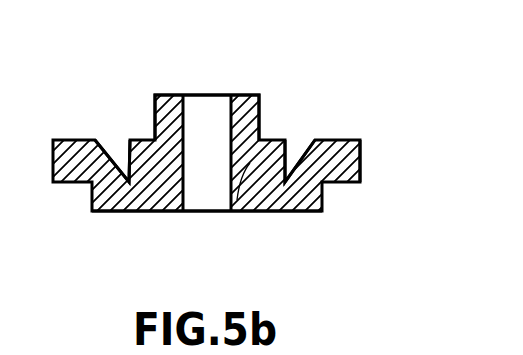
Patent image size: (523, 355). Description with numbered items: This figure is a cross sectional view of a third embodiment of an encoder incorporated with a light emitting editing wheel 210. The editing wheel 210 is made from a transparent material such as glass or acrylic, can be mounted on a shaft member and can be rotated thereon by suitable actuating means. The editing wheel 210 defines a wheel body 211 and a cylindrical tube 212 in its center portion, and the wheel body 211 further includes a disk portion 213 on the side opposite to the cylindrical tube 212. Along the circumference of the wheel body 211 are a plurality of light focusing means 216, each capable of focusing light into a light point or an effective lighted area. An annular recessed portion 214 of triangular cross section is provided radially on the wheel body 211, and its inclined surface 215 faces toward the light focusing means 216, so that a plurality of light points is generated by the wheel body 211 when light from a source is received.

The editing wheel 210 is at (350, 140).
The wheel body 211 is at (230, 211).
The cylindrical tube 212 is at (175, 112).
The disk portion 213 is at (253, 213).
The annular recessed portion 214 is at (118, 152).
The inclined surface 215 is at (302, 158).
The light focusing means 216 is at (360, 156).